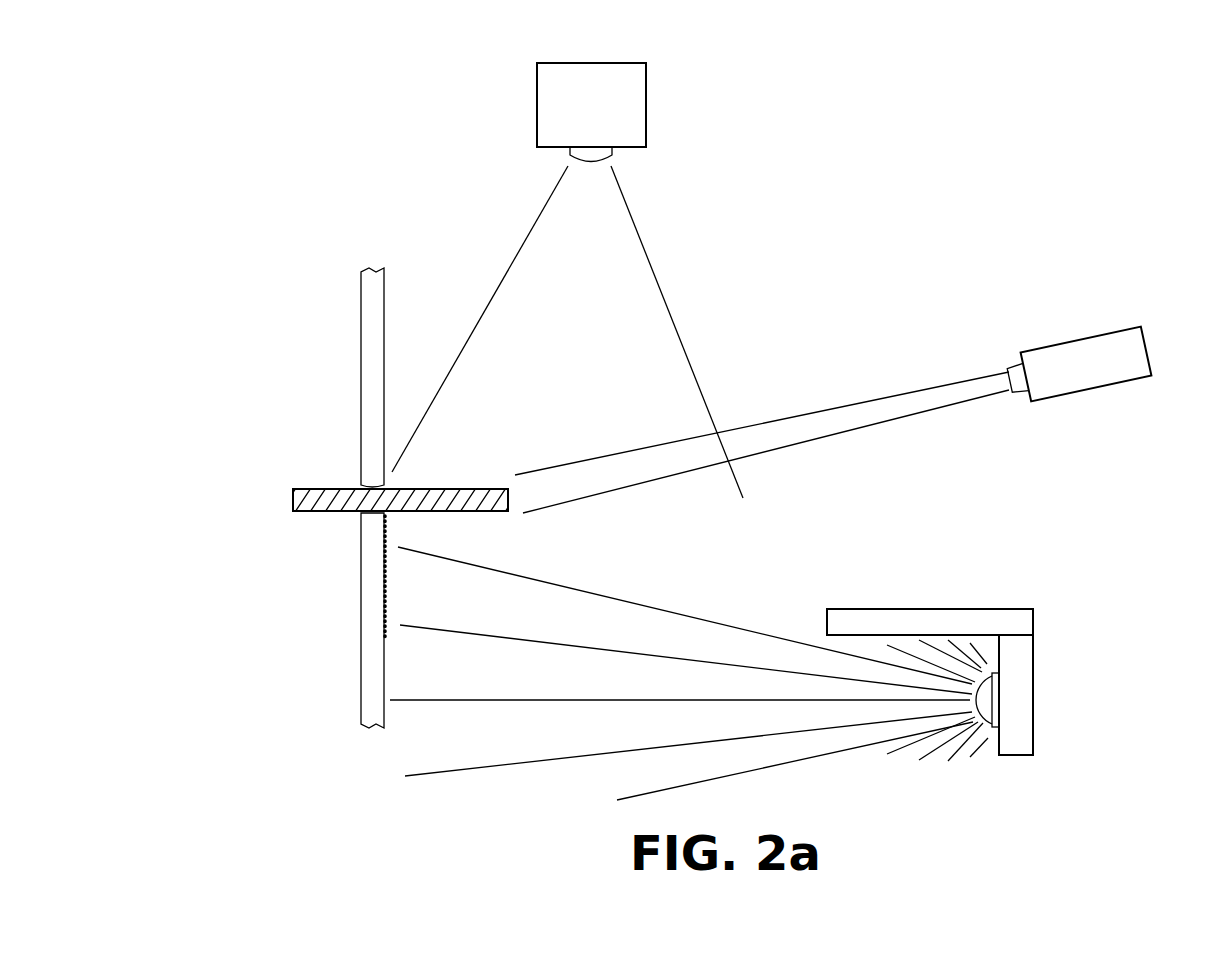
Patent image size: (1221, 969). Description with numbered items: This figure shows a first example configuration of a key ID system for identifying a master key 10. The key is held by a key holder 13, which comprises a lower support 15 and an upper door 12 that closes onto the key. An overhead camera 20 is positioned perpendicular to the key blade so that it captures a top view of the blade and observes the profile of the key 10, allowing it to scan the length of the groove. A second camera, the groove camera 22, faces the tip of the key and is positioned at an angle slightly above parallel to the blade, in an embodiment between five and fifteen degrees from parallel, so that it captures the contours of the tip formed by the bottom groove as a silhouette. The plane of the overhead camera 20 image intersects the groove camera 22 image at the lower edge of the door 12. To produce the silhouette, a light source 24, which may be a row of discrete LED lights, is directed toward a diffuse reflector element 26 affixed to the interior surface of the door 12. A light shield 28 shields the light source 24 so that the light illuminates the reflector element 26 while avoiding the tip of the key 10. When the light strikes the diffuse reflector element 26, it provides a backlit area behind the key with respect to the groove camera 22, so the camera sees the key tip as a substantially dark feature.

The master key 10 is at (456, 474).
The upper door 12 is at (359, 469).
The key holder 13 is at (241, 545).
The lower support 15 is at (373, 515).
The overhead camera 20 is at (660, 111).
The groove camera 22 is at (1085, 418).
The light source 24 is at (1056, 684).
The diffuse reflector element 26 is at (409, 590).
The light shield 28 is at (913, 594).